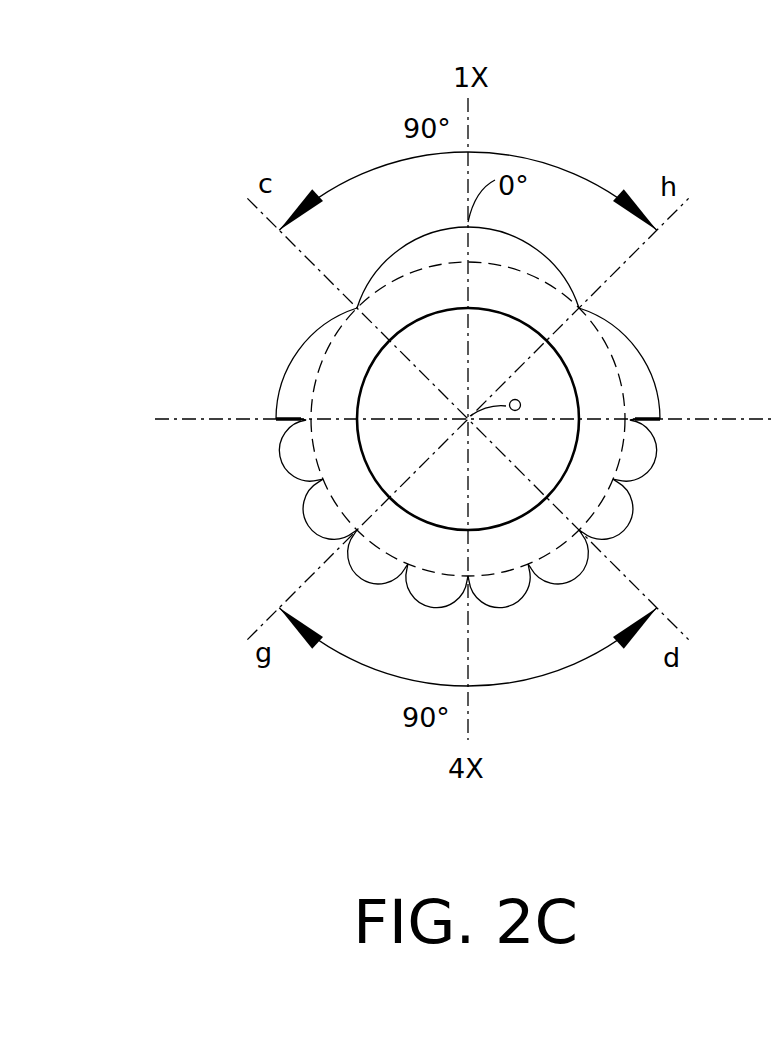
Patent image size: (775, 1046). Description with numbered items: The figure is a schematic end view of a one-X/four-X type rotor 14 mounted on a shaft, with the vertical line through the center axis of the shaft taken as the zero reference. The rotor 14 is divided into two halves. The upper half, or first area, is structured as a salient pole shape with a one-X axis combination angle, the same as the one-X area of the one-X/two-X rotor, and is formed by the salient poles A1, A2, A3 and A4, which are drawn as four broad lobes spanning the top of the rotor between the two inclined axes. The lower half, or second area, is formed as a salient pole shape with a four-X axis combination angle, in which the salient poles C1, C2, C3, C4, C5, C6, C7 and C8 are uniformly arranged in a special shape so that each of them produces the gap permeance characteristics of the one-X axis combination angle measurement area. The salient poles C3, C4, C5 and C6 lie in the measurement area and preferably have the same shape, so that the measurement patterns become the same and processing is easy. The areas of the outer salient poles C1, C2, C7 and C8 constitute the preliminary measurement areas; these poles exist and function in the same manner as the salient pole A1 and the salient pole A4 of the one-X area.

The rotor 14 is at (226, 316).
The salient pole A1 is at (300, 363).
The salient pole A2 is at (440, 228).
The salient pole A3 is at (497, 228).
The salient pole A4 is at (640, 363).
The salient pole C1 is at (282, 457).
The salient pole C2 is at (302, 516).
The salient pole C3 is at (368, 588).
The salient pole C4 is at (432, 610).
The salient pole C5 is at (502, 610).
The salient pole C6 is at (567, 585).
The salient pole C7 is at (630, 511).
The salient pole C8 is at (656, 456).